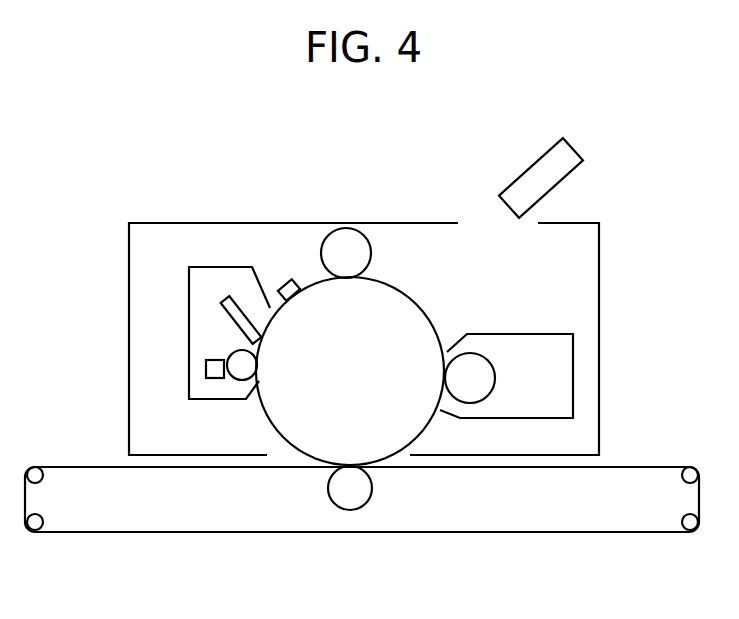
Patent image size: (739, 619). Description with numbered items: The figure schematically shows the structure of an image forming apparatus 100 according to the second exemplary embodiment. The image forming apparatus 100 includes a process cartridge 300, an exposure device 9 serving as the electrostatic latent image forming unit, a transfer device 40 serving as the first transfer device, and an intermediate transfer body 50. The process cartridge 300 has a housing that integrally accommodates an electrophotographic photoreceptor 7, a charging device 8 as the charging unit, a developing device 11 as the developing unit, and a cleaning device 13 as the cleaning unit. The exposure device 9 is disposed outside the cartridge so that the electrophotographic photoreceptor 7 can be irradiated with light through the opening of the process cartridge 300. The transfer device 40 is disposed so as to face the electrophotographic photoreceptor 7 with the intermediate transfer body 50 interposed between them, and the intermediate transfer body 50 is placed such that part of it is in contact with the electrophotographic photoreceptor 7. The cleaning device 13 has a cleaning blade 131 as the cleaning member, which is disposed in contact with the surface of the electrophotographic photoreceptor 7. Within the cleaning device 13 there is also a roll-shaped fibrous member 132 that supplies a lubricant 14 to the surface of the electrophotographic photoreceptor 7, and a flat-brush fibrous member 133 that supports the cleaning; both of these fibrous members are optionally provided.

The electrophotographic photoreceptor 7 is at (432, 432).
The charging device 8 is at (364, 228).
The exposure device 9 is at (530, 167).
The developing device 11 is at (530, 334).
The cleaning device 13 is at (189, 331).
The cleaning blade 131 is at (221, 300).
The fibrous member 132 is at (238, 380).
The fibrous member 133 is at (285, 280).
The lubricant 14 is at (206, 368).
The transfer device 40 is at (372, 485).
The intermediate transfer body 50 is at (388, 533).
The image forming apparatus 100 is at (654, 122).
The process cartridge 300 is at (600, 309).